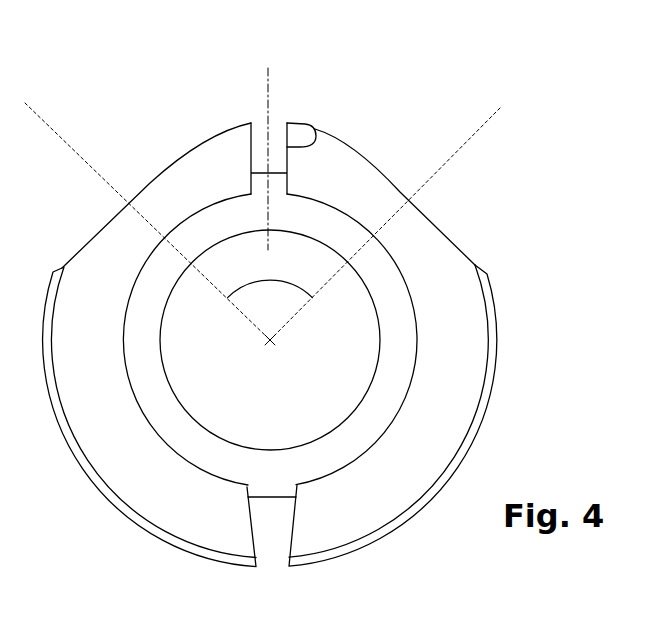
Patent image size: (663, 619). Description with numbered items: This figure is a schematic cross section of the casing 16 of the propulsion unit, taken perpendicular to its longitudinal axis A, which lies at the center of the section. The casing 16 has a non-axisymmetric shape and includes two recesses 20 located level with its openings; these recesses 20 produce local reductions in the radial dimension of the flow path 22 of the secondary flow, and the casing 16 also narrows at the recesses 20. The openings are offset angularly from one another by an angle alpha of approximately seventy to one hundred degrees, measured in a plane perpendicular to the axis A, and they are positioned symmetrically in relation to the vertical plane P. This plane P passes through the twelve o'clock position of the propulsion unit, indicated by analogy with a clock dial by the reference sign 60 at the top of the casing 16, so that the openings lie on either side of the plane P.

The casing 16 is at (313, 317).
The recesses 20 is at (149, 180).
The flow path 22 is at (270, 345).
The 12 o'clock reference 60 is at (312, 127).
The plane P is at (266, 90).
The longitudinal axis A is at (268, 347).
The angle alpha is at (262, 278).